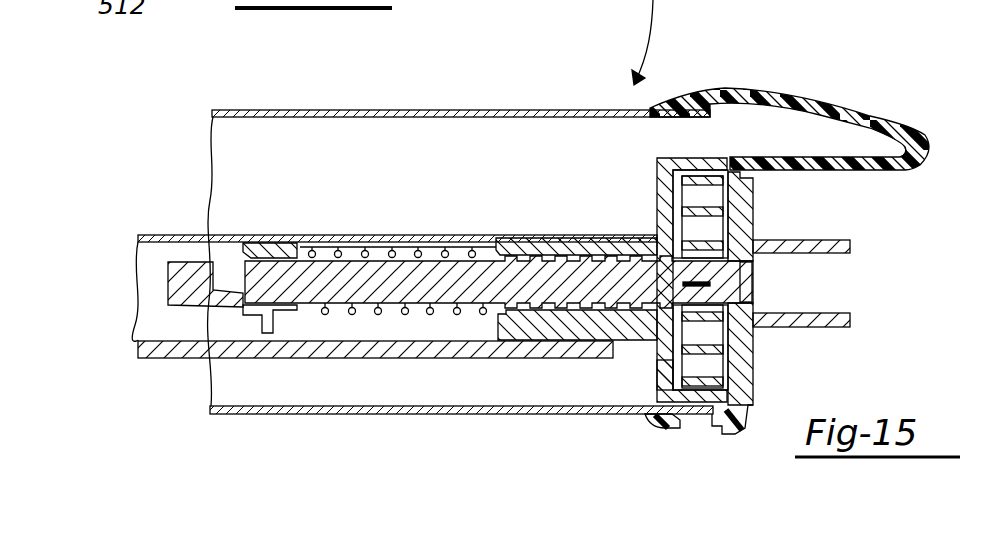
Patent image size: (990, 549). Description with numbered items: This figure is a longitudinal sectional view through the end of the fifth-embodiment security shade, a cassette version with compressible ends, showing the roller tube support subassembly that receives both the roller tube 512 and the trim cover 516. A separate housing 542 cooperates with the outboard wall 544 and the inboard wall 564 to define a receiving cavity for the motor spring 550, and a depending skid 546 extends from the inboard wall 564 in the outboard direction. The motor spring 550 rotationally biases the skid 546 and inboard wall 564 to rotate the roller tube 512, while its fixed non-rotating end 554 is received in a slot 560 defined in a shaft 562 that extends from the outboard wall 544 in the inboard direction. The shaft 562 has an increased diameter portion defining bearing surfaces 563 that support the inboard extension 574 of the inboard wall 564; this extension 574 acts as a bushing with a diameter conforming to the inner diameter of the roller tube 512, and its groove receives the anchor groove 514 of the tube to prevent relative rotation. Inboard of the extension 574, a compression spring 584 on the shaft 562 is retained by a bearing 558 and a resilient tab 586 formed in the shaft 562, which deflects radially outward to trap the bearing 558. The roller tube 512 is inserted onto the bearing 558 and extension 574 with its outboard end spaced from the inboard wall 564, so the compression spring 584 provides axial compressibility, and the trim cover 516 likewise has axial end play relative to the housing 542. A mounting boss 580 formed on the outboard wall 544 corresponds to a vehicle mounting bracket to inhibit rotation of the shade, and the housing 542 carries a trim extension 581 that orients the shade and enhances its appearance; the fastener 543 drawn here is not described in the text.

The roller tube 512 is at (317, 358).
The anchor groove 514 is at (420, 236).
The trim cover 516 is at (281, 110).
The housing 542 is at (770, 85).
The fastening screw 543 is at (692, 93).
The outboard wall 544 is at (753, 205).
The skid 546 is at (725, 424).
The motor spring 550 is at (700, 367).
The fixed non-rotating end 554 is at (740, 277).
The bearing 558 is at (256, 318).
The slot 560 is at (740, 294).
The shaft 562 is at (407, 278).
The bearing surfaces 563 is at (562, 312).
The inboard wall 564 is at (657, 367).
The inboard extension 574 is at (543, 247).
The mounting boss 580 is at (813, 328).
The trim extension 581 is at (883, 122).
The compression spring 584 is at (368, 246).
The resilient tab 586 is at (242, 300).